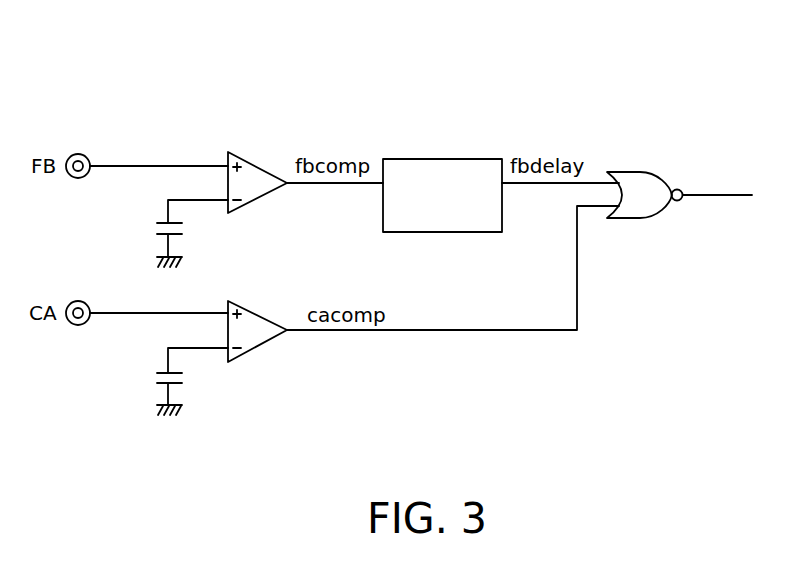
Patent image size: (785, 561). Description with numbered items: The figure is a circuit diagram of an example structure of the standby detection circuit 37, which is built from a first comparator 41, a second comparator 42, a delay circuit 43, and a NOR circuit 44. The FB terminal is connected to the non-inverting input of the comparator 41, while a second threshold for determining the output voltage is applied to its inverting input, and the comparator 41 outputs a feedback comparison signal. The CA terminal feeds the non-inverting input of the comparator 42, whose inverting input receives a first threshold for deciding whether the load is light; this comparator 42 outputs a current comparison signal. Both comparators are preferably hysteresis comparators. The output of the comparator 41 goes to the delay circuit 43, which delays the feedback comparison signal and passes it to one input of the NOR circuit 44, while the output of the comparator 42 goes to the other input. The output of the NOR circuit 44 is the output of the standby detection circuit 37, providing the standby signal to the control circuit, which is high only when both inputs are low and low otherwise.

The standby detection circuit 37 is at (558, 70).
The comparator 41 is at (259, 161).
The comparator 42 is at (258, 311).
The delay circuit 43 is at (441, 158).
The NOR circuit 44 is at (640, 170).